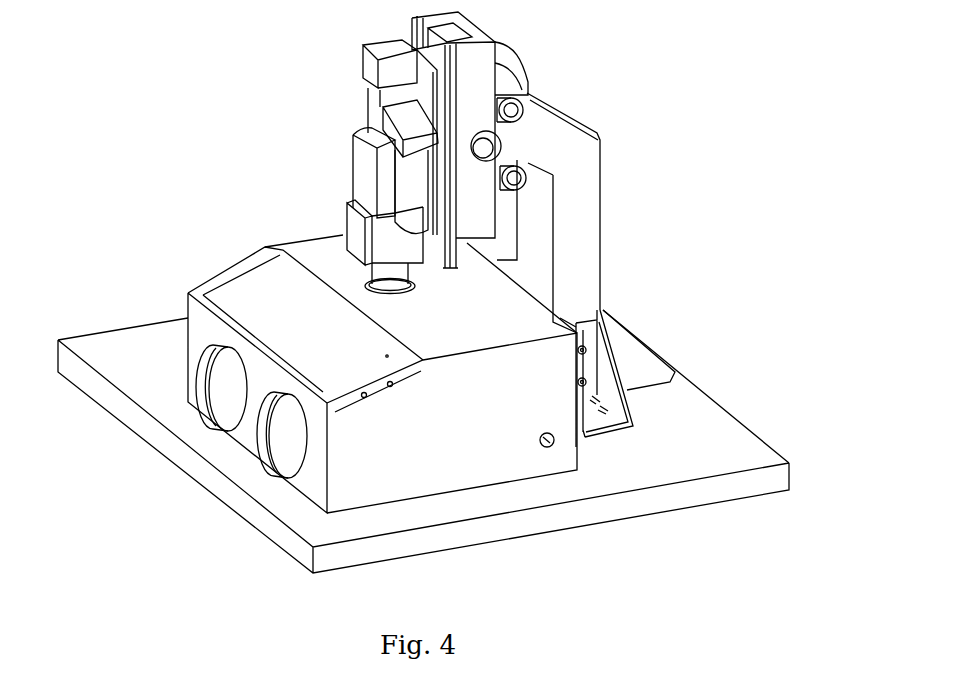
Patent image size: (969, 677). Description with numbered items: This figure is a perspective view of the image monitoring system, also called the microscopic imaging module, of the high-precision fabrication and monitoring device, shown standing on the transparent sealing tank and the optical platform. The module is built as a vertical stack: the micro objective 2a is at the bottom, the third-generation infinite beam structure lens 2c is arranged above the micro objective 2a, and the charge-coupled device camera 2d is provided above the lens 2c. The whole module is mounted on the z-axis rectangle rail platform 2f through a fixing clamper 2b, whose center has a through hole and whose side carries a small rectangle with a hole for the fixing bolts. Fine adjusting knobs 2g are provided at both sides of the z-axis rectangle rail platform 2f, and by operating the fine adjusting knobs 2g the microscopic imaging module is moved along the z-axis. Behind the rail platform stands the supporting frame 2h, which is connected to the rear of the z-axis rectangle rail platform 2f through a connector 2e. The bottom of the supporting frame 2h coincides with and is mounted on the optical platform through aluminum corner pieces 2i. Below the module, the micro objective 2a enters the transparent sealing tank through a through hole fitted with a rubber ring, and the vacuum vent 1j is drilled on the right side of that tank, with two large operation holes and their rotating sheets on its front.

The vacuum vent 1j is at (551, 447).
The micro objective 2a is at (390, 278).
The fixing clamper 2b is at (363, 233).
The third-generation infinite beam structure lens 2c is at (368, 162).
The charge-coupled device camera 2d is at (368, 68).
The connector 2e is at (500, 61).
The z-axis rectangle rail platform 2f is at (432, 92).
The fine adjusting knobs 2g is at (488, 145).
The supporting frame 2h is at (587, 287).
The aluminum corner pieces 2i is at (610, 397).